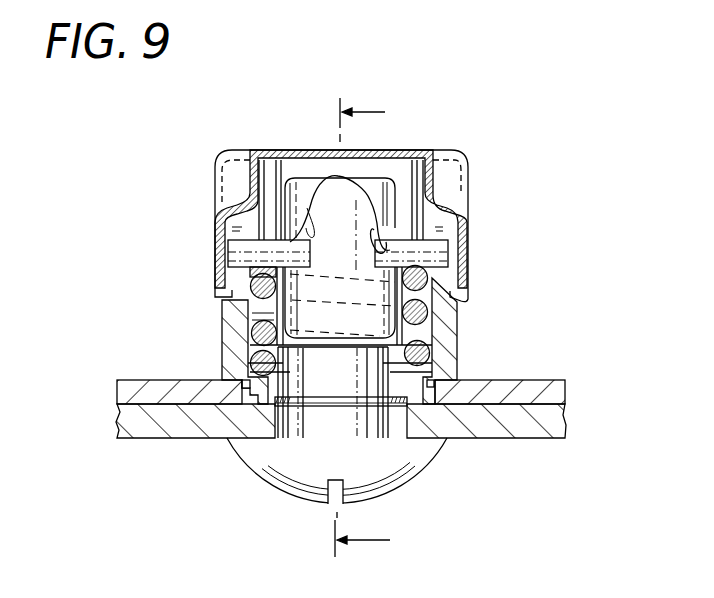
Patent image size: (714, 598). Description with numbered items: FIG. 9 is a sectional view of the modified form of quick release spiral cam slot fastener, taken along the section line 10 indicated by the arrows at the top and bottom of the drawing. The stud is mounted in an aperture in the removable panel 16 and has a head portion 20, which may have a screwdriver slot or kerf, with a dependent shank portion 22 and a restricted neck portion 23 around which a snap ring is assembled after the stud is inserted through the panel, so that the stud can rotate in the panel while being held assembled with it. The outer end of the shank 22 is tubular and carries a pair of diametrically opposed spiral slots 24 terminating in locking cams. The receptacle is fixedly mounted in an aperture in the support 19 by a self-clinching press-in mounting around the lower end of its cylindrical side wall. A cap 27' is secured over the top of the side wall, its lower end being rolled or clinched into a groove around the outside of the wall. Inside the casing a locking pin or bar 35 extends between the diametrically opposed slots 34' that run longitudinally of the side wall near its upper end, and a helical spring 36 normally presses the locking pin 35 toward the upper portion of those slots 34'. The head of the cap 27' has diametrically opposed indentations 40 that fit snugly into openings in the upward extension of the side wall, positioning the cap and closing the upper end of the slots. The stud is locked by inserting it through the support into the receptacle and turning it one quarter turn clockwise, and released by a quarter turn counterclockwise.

The section line 10- 10 is at (376, 327).
The panel 16 is at (490, 428).
The support 19 is at (507, 390).
The head portion 20 is at (282, 462).
The shank portion 22 is at (303, 306).
The neck portion 23 is at (345, 391).
The spiral slots 24 is at (300, 224).
The cap 27' is at (348, 207).
The slots 34' is at (380, 200).
The locking pin or bar 35 is at (240, 248).
The helical spring 36 is at (261, 331).
The indentations 40 is at (448, 178).